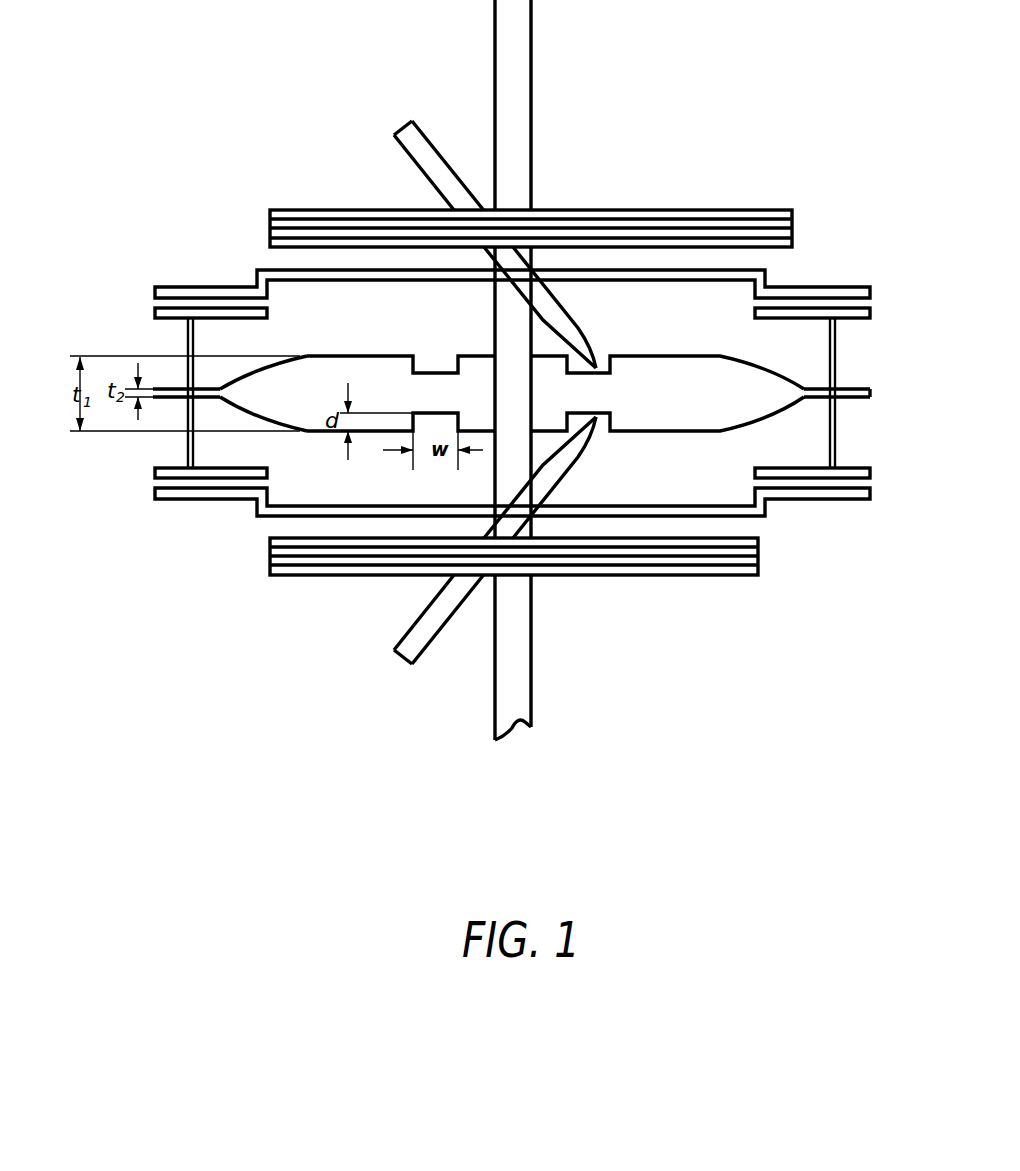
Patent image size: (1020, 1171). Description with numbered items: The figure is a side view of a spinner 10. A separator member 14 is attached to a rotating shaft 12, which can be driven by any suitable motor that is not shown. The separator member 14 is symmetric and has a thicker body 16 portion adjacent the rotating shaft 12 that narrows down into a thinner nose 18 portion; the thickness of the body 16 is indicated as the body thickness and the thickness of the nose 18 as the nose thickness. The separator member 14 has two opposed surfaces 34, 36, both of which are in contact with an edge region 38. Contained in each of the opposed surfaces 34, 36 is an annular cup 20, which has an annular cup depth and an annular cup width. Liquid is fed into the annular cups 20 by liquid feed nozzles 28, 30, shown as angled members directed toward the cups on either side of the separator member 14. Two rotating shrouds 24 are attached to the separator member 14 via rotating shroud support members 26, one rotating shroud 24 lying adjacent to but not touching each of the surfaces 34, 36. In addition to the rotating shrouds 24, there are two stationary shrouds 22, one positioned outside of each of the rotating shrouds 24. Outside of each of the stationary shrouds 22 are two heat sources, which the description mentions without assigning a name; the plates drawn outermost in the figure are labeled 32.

The spinner 10 is at (671, 85).
The rotating shaft 12 is at (515, 658).
The separator member 14 is at (766, 355).
The body 16 is at (682, 415).
The nose 18 is at (160, 388).
The annular cup 20 is at (603, 430).
The stationary shroud 22 is at (847, 286).
The rotating shroud 24 is at (155, 300).
The rotating shroud support member 26 is at (188, 352).
The liquid feed nozzle 28 is at (406, 660).
The liquid feed nozzle 30 is at (405, 130).
The mounting plate 32 is at (755, 210).
The opposed surface 34 is at (267, 360).
The opposed surface 36 is at (303, 430).
The edge region 38 is at (872, 393).